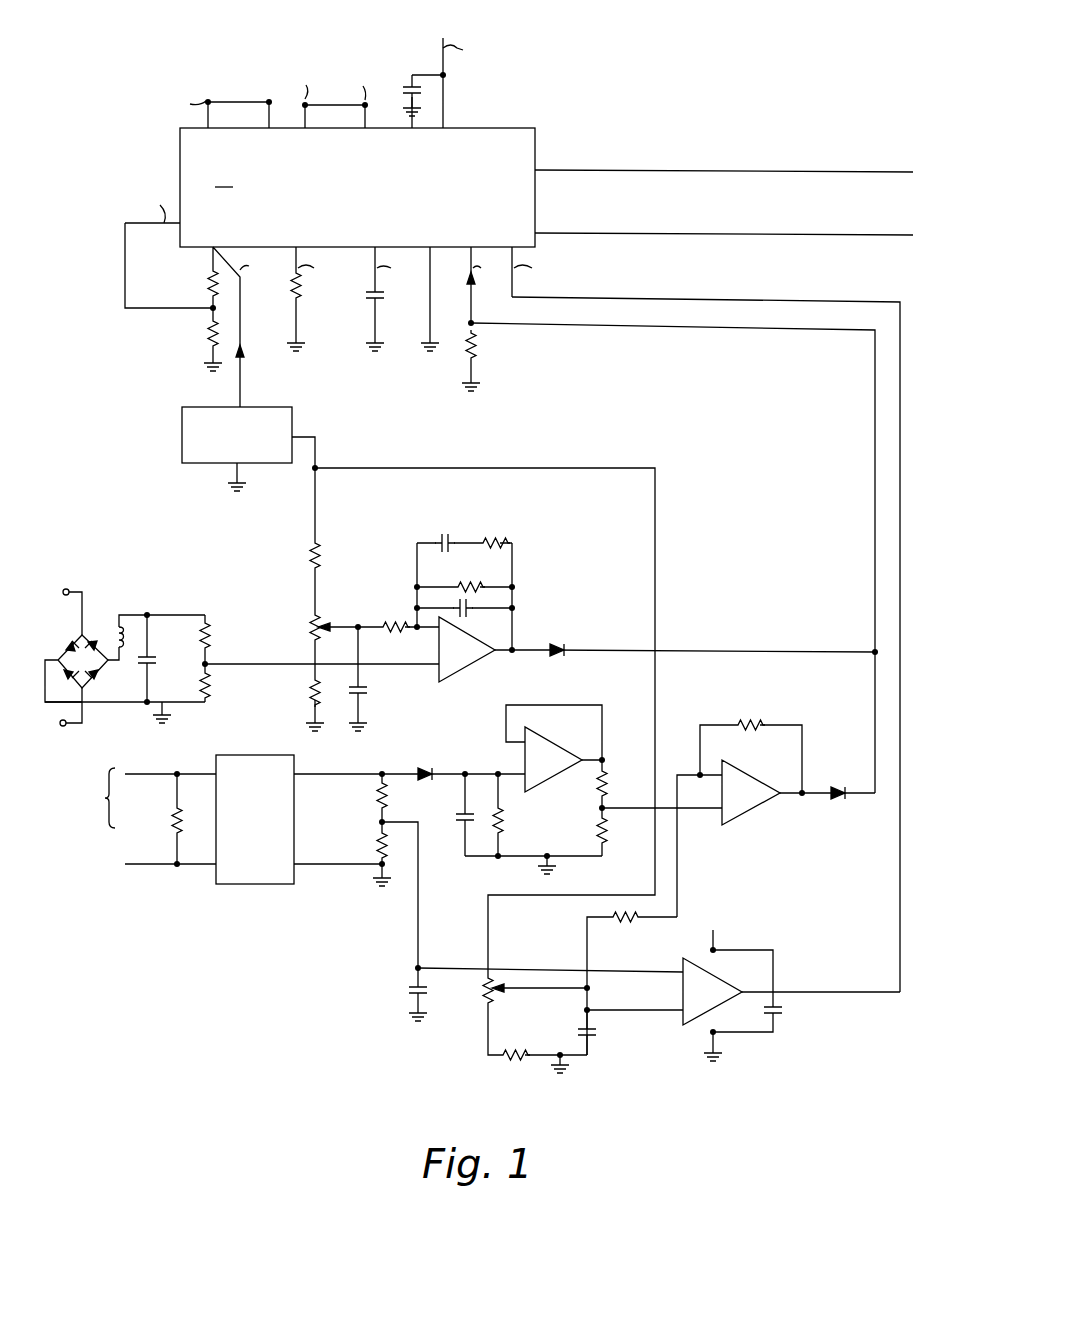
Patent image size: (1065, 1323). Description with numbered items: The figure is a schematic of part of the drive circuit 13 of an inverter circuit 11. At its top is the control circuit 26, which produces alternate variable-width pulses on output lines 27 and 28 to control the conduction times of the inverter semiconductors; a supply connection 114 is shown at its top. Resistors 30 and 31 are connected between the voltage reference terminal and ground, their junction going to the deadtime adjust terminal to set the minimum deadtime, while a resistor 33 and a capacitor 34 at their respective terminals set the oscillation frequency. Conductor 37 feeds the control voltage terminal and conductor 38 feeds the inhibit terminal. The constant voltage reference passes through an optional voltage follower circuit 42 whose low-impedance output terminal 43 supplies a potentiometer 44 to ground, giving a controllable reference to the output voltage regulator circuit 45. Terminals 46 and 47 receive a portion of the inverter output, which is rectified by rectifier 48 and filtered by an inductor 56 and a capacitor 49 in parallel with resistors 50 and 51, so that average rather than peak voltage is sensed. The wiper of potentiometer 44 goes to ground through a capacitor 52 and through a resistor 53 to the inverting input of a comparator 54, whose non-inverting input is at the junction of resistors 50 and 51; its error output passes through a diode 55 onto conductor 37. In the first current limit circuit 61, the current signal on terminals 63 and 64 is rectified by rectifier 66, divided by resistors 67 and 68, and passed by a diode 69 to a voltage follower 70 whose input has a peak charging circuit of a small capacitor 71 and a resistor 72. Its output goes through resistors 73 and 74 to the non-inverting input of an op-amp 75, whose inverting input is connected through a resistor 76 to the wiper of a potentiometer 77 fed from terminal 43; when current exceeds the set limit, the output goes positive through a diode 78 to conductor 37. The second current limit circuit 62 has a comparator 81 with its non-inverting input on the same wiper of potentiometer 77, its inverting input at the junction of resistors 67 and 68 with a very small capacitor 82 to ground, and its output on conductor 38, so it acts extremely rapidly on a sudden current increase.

The inverter circuit 11 is at (742, 136).
The drive circuit 13 is at (932, 386).
The control circuit 26 is at (535, 130).
The output line 27 is at (545, 170).
The output line 28 is at (545, 233).
The resistor 30 is at (208, 280).
The resistor 31 is at (208, 336).
The resistor 33 is at (298, 292).
The capacitor 34 is at (378, 302).
The conductor 37 is at (565, 328).
The conductor 38 is at (567, 297).
The voltage follower circuit 42 is at (282, 407).
The output terminal 43 is at (318, 466).
The potentiometer 44 is at (310, 627).
The output voltage regulator circuit 45 is at (614, 610).
The terminal 46 is at (70, 588).
The terminal 47 is at (64, 728).
The rectifier 48 is at (92, 640).
The capacitor 49 is at (150, 656).
The resistor 50 is at (208, 640).
The resistor 51 is at (208, 690).
The capacitor 52 is at (362, 692).
The resistor 53 is at (390, 632).
The comparator 54 is at (478, 660).
The diode 55 is at (562, 655).
The inductor 56 is at (122, 620).
The first current limit circuit 61 is at (836, 736).
The second current limit circuit 62 is at (628, 962).
The terminal 63 is at (136, 772).
The terminal 64 is at (136, 866).
The rectifier 66 is at (240, 755).
The voltage divider resistor 67 is at (370, 797).
The voltage divider resistor 68 is at (370, 842).
The diode 69 is at (427, 768).
The voltage follower 70 is at (556, 770).
The capacitor 71 is at (460, 814).
The resistor 72 is at (502, 822).
The resistor 73 is at (606, 782).
The resistor 74 is at (606, 832).
The op-amp 75 is at (752, 780).
The resistor 76 is at (628, 920).
The potentiometer 77 is at (478, 992).
The diode 78 is at (838, 800).
The comparator 81 is at (722, 985).
The capacitor 82 is at (409, 980).
The supply line 114 is at (469, 49).